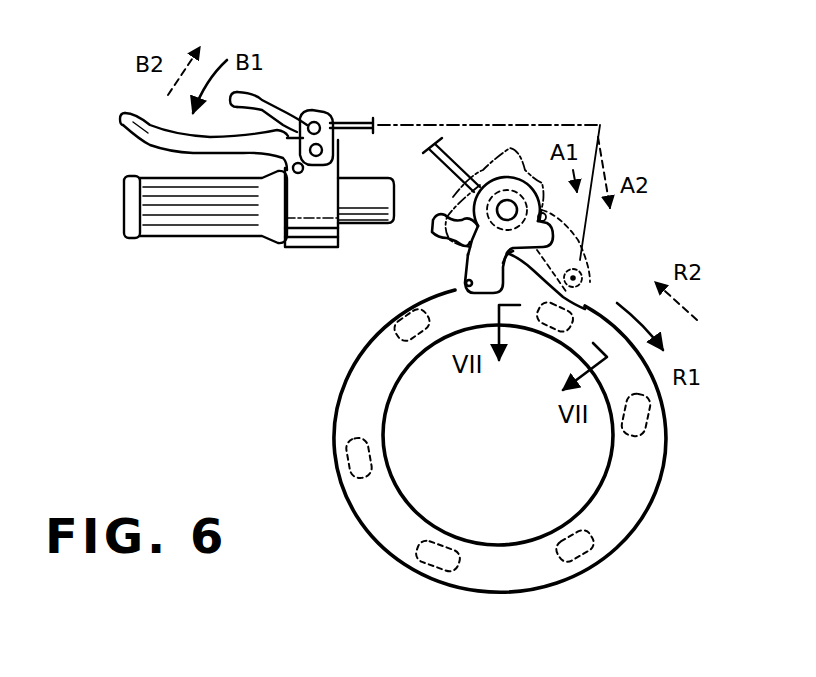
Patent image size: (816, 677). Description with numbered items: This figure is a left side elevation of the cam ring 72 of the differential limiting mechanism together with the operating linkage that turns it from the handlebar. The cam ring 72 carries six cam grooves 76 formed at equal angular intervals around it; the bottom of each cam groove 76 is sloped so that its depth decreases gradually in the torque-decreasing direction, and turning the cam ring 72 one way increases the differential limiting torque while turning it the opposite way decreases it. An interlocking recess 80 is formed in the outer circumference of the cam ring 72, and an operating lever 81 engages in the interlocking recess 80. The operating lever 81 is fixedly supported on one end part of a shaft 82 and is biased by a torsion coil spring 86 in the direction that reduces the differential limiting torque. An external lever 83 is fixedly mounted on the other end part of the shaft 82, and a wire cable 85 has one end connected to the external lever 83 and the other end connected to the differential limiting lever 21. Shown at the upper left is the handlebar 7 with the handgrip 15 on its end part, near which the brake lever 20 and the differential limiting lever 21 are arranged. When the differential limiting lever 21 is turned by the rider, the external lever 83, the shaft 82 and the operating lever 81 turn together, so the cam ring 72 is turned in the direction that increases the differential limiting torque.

The handlebar 7 is at (355, 188).
The handgrip 15 is at (200, 227).
The brake lever 20 is at (132, 130).
The differential limiting lever 21 is at (257, 97).
The cam ring 72 is at (362, 525).
The cam groove 76 is at (385, 330).
The interlocking recess 80 is at (463, 281).
The operating lever 81 is at (467, 249).
The shaft 82 is at (509, 205).
The external lever 83 is at (501, 165).
The wire cable 85 is at (437, 122).
The torsion coil spring 86 is at (450, 207).